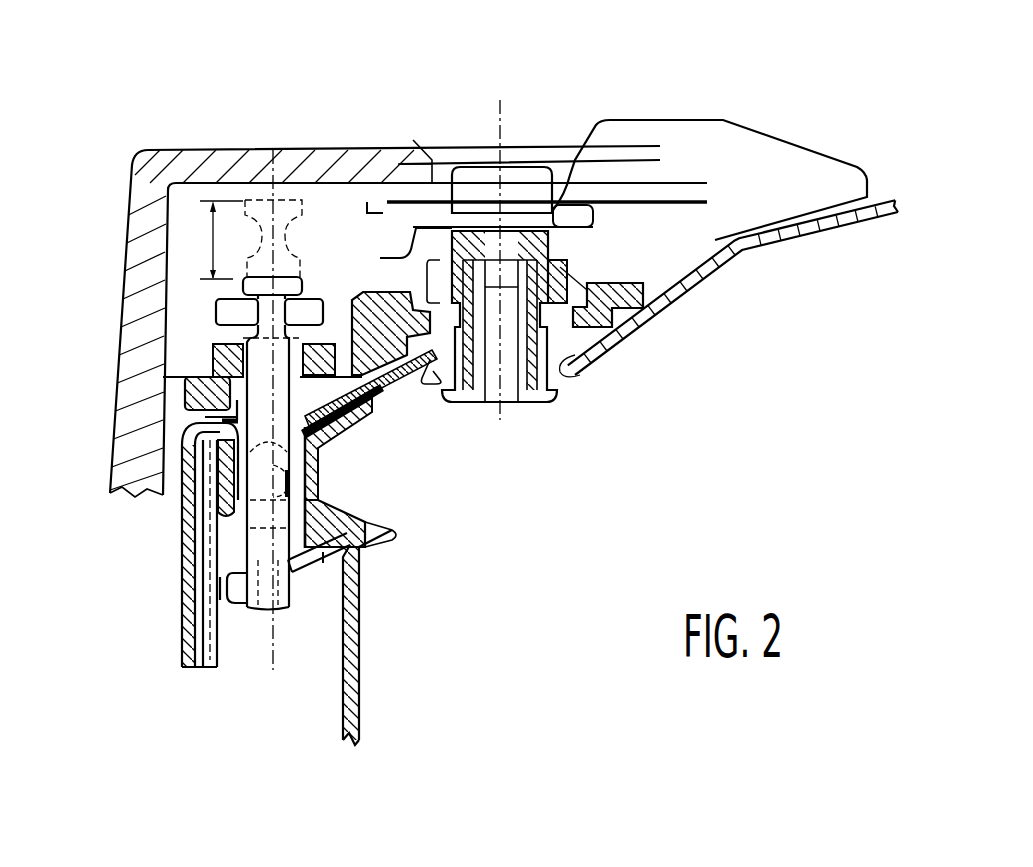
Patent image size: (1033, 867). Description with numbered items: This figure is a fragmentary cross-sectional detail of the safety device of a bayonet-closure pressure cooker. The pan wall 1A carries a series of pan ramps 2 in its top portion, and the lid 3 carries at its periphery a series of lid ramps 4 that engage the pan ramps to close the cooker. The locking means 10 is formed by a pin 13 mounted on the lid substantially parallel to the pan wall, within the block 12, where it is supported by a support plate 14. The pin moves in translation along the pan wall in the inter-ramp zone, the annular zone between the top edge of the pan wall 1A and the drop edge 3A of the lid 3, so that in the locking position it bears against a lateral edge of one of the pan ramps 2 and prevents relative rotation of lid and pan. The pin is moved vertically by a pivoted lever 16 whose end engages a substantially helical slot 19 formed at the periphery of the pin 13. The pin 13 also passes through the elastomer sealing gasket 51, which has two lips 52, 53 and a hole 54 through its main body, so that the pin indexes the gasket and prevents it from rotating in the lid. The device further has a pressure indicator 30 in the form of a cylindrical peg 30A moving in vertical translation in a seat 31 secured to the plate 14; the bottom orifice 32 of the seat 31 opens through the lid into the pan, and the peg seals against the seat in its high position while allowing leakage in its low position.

The block 12 is at (222, 163).
The locking means 10 is at (339, 252).
The pressure indicator 30 is at (531, 157).
The cylindrical peg 30A is at (572, 172).
The lid 3 is at (812, 232).
The slot 19 is at (237, 297).
The lever 16 is at (225, 313).
The pin 13 is at (265, 385).
The support plate 14 is at (200, 396).
The lip 52 is at (392, 413).
The sealing gasket 51 is at (360, 445).
The lip 53 is at (392, 535).
The seat 31 is at (600, 343).
The bottom orifice 32 is at (530, 407).
The hole 54 is at (237, 515).
The drop edge 3A is at (188, 577).
The lid ramp 4 is at (222, 610).
The pan ramp 2 is at (320, 557).
The pan wall 1A is at (353, 650).